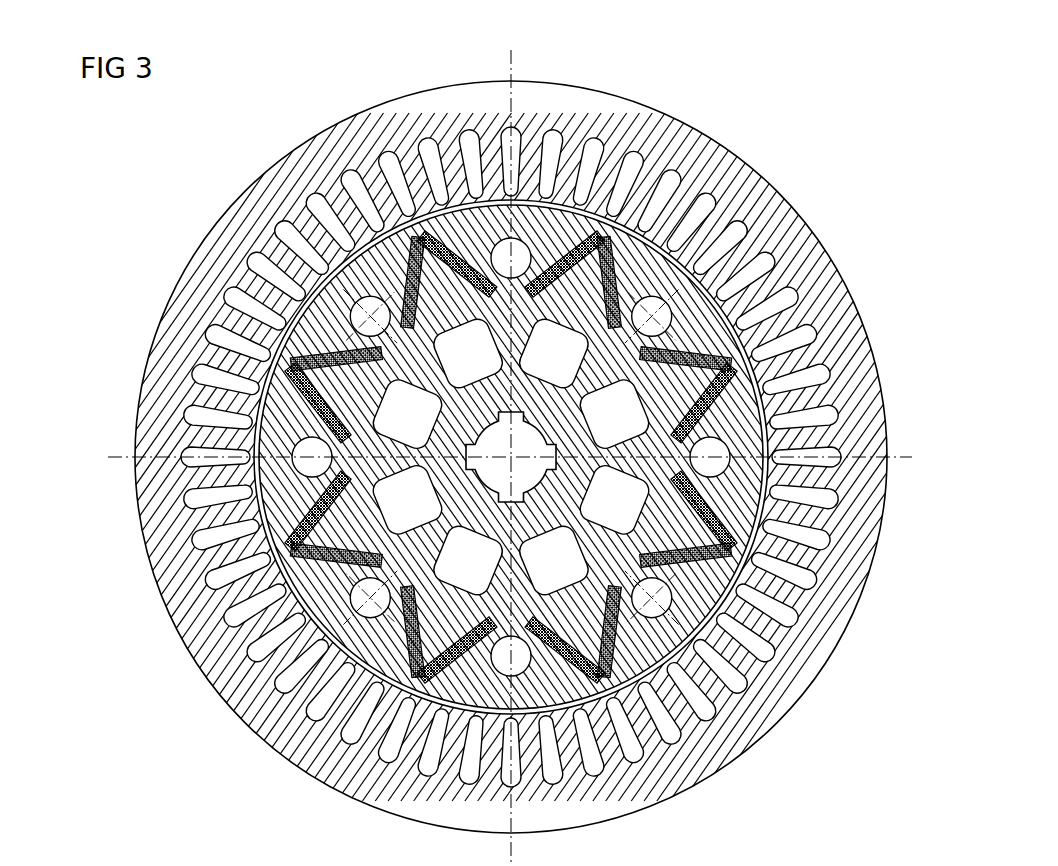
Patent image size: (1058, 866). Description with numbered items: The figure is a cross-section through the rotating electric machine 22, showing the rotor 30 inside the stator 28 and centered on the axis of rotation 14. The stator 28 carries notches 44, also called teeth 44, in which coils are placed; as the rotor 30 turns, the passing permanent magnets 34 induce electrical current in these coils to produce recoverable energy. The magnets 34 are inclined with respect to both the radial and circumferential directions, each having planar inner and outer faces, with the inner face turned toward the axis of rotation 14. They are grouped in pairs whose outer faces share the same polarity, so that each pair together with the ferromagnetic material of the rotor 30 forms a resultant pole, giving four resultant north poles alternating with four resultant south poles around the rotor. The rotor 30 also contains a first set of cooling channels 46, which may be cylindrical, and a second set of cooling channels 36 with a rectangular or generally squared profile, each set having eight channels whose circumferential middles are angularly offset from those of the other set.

The axis of rotation 14 is at (516, 458).
The rotating electric machine 22 is at (178, 182).
The stator 28 is at (632, 128).
The rotor 30 is at (755, 248).
The permanent magnets 34 is at (521, 458).
The second set of cooling channels 36 is at (544, 364).
The notches 44 is at (803, 495).
The first set of cooling channels 46 is at (460, 210).